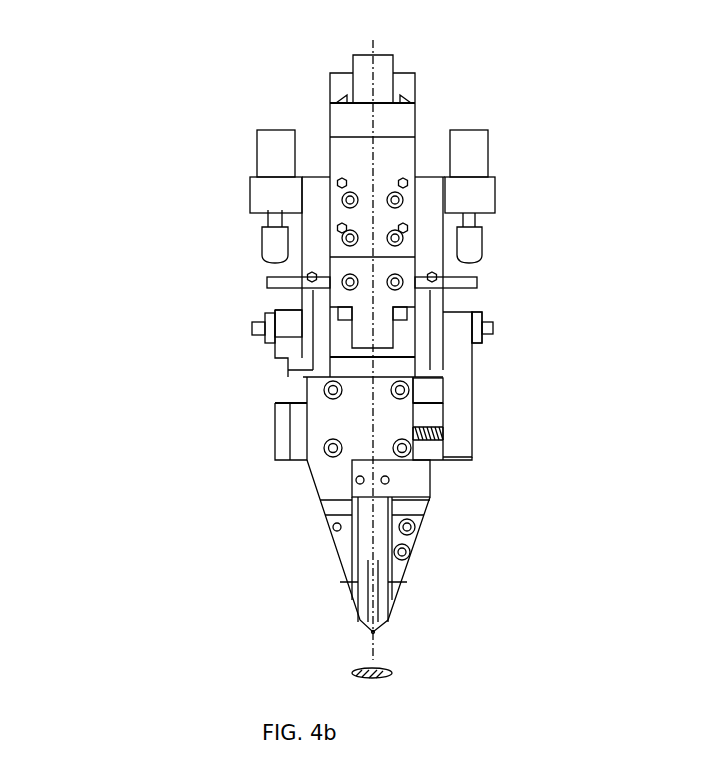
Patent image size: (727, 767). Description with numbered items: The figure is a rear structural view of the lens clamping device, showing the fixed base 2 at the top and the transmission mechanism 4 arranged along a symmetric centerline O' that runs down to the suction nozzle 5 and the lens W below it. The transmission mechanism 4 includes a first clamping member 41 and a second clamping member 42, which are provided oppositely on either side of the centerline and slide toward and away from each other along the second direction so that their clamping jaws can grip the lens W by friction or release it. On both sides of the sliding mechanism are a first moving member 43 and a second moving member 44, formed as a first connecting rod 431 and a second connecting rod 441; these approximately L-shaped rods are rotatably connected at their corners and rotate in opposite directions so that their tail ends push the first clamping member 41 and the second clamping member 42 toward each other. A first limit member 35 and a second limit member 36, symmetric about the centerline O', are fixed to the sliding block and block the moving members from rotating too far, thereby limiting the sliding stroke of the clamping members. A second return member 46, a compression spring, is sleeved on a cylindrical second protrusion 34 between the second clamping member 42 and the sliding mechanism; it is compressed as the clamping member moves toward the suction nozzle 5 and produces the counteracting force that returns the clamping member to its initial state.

The base 2 is at (348, 93).
The symmetric centerline O' is at (403, 350).
The second limit member 36 is at (291, 300).
The first limit member 35 is at (480, 312).
The second protrusion 34 is at (427, 422).
The second return member 46 is at (433, 437).
The transmission mechanism 4 is at (256, 404).
The second moving member 44 is at (297, 300).
The second connecting rod 441 is at (372, 277).
The first moving member 43 is at (305, 317).
The first connecting rod 431 is at (372, 327).
The second clamping member 42 is at (323, 465).
The first clamping member 41 is at (333, 558).
The suction nozzle 5 is at (375, 636).
The lens W is at (352, 678).